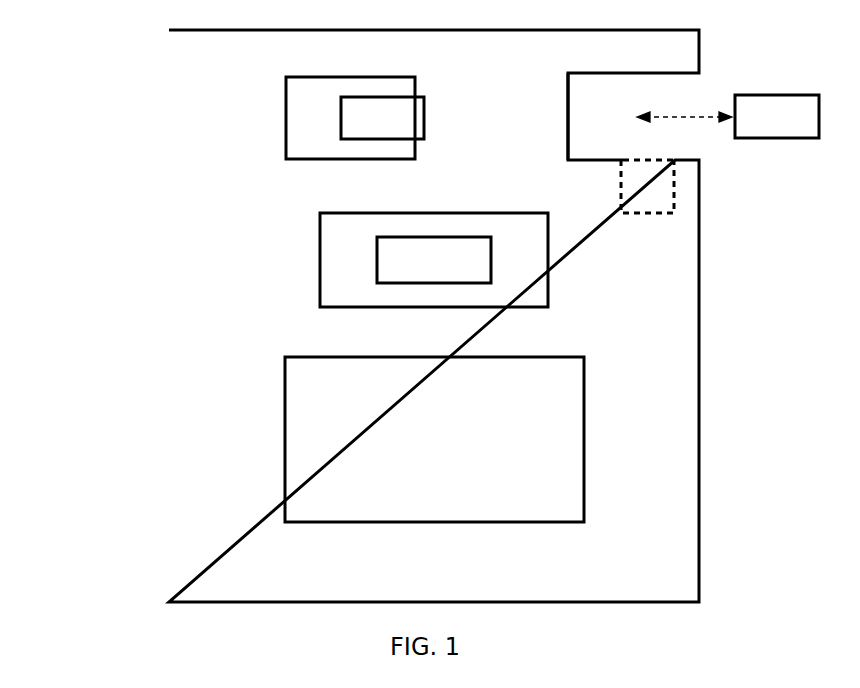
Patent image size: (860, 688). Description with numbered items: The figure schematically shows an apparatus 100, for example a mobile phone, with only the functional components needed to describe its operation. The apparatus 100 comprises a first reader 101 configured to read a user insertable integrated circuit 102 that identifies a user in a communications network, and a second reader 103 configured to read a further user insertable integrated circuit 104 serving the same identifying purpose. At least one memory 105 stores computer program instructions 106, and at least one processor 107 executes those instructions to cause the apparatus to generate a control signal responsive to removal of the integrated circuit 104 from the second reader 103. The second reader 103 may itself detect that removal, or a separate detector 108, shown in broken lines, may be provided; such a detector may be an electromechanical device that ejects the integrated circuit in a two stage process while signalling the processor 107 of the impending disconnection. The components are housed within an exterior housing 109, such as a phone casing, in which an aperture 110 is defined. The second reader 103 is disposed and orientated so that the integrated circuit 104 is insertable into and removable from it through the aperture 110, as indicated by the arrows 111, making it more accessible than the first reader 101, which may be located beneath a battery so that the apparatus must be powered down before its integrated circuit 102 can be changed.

The apparatus 100 is at (100, 80).
The first reader 101 is at (286, 124).
The user insertable integrated circuit 102 is at (424, 116).
The second reader 103 is at (568, 128).
The user insertable integrated circuit 104 is at (780, 95).
The memory 105 is at (320, 260).
The computer program instructions 106 is at (491, 260).
The processor 107 is at (584, 432).
The detector 108 is at (640, 213).
The exterior housing 109 is at (700, 452).
The aperture 110 is at (699, 141).
The arrows 111 is at (685, 117).